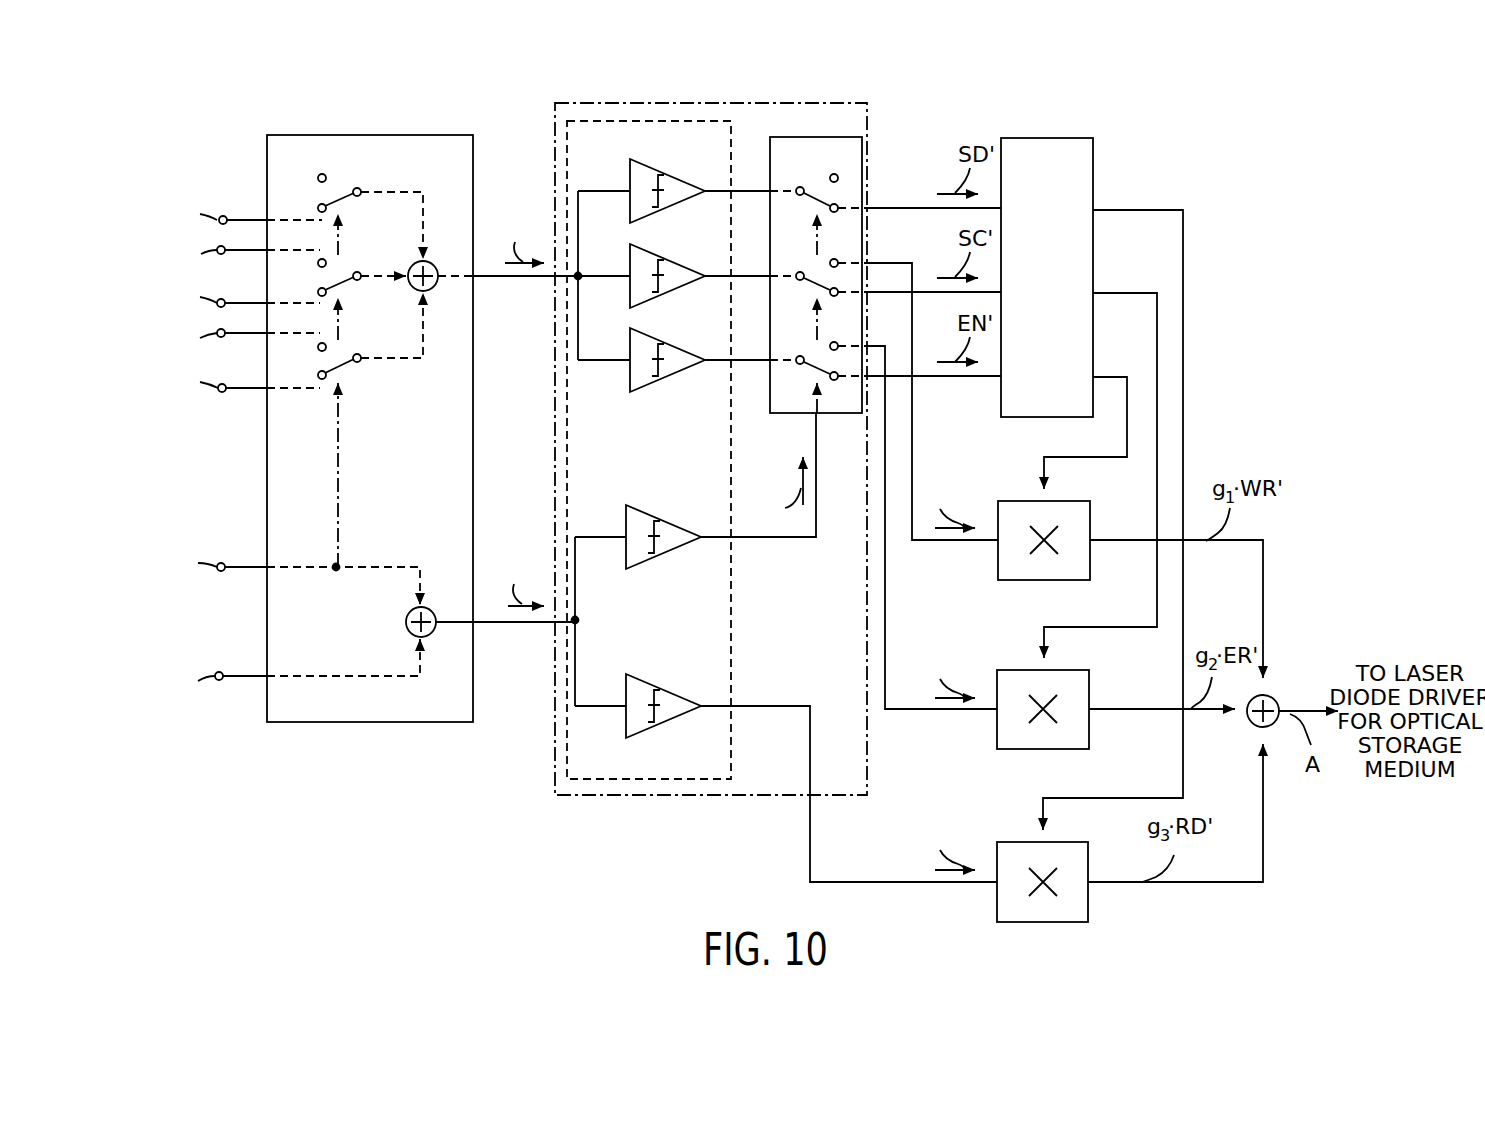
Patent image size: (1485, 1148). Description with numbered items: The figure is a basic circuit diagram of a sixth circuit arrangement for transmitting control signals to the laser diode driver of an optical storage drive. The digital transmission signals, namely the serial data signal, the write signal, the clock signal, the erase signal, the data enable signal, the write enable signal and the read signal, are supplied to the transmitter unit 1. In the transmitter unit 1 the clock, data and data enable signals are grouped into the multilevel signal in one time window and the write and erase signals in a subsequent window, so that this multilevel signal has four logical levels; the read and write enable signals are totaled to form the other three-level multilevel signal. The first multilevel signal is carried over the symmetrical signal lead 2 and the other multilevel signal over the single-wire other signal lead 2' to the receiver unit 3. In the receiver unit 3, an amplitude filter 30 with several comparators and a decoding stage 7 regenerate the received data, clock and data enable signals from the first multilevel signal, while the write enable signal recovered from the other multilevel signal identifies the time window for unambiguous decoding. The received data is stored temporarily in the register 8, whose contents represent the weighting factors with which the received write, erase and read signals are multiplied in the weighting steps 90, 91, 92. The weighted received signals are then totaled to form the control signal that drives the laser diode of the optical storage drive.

The transmitter unit 1 is at (352, 722).
The signal lead 2 is at (510, 275).
The other signal lead 2' is at (507, 620).
The receiver unit 3 is at (776, 492).
The amplitude filter 30 is at (732, 636).
The decoding stage 7 is at (786, 413).
The register 8 is at (1058, 138).
The weighting step 90 is at (998, 565).
The weighting step 91 is at (998, 735).
The weighting step 92 is at (998, 910).